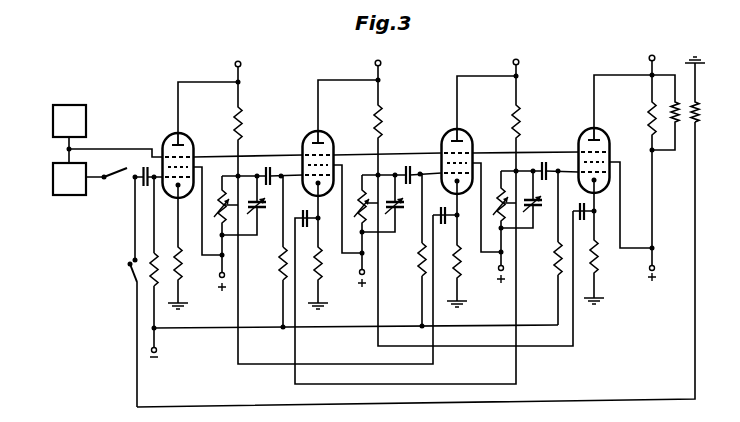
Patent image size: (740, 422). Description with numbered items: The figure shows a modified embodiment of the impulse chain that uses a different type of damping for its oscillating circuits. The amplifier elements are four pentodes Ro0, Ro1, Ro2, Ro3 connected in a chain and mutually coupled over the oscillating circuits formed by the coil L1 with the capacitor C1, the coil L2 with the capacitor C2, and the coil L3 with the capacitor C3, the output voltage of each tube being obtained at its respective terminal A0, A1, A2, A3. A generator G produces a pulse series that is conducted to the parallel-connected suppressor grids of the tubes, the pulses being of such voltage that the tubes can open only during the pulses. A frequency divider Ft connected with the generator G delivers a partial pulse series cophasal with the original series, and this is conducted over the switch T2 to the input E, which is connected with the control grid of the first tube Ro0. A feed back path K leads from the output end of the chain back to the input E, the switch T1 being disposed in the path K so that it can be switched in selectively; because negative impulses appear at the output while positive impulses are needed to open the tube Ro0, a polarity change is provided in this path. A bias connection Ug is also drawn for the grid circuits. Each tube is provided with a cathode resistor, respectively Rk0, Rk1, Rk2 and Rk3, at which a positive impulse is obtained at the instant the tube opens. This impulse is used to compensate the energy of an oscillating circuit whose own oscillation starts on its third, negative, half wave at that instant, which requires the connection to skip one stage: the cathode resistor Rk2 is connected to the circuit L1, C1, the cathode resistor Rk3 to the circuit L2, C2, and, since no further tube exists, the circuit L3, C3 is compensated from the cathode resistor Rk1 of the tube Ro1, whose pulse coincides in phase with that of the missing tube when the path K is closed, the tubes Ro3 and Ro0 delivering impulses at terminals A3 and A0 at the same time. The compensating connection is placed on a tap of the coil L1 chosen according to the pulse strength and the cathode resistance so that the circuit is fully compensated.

The generator G is at (103, 100).
The frequency divider Ft is at (63, 206).
The switch T1 is at (127, 264).
The switch T2 is at (120, 185).
The input E is at (137, 172).
The tube Ro0 is at (191, 165).
The tube Ro1 is at (333, 163).
The tube Ro2 is at (472, 161).
The tube Ro3 is at (608, 160).
The output terminal A0 is at (239, 56).
The output terminal A1 is at (379, 55).
The output terminal A2 is at (516, 54).
The output terminal A3 is at (653, 50).
The coil L1 is at (221, 233).
The coil L2 is at (361, 231).
The coil L3 is at (499, 227).
The capacitor C1 is at (249, 205).
The capacitor C2 is at (388, 203).
The capacitor C3 is at (528, 199).
The cathode resistor Rk0 is at (189, 247).
The cathode resistor Rk1 is at (329, 263).
The cathode resistor Rk2 is at (469, 261).
The cathode resistor Rk3 is at (606, 257).
The grid bias terminal Ug is at (165, 343).
The feed back path K is at (416, 264).